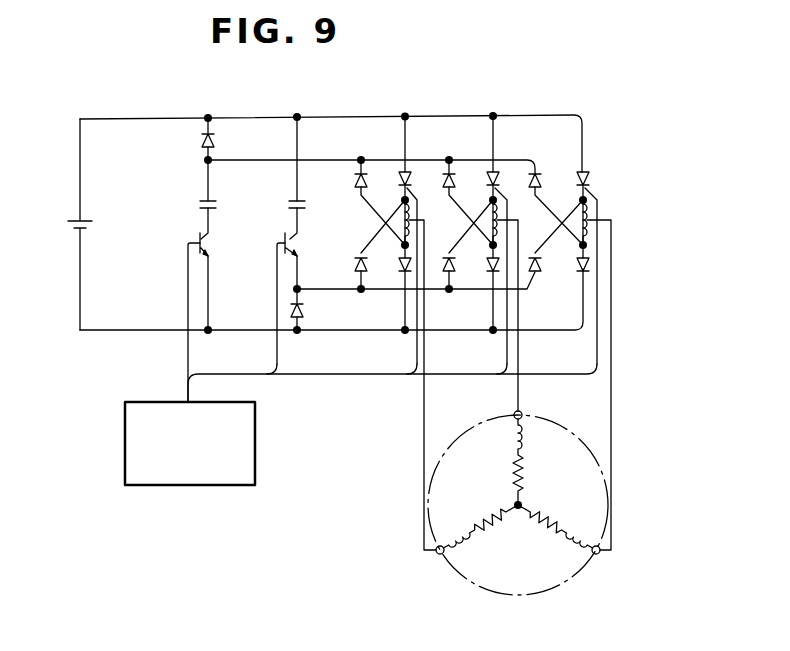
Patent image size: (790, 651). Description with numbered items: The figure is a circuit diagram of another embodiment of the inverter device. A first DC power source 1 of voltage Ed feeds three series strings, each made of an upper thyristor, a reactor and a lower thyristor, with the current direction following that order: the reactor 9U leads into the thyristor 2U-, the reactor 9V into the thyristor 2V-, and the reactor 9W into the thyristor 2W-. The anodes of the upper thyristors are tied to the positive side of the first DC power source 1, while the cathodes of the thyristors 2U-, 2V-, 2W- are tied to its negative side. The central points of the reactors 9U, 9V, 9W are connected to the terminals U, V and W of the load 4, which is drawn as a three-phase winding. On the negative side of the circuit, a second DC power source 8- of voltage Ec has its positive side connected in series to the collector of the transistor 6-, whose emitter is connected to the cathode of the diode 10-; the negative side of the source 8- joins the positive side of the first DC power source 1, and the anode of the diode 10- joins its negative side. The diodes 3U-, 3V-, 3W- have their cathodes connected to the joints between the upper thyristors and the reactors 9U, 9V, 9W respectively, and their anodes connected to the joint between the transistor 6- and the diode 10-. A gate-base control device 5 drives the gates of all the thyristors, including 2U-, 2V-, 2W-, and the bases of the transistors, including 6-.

The first DC power source 1 is at (67, 228).
The load 4 is at (456, 572).
The gate-base control device 5 is at (198, 487).
The transistor 6- is at (283, 242).
The second DC power source 8- is at (288, 205).
The diode 10- is at (308, 318).
The thyristor 2U- is at (401, 279).
The thyristor 2V- is at (486, 279).
The thyristor 2W- is at (590, 265).
The diode 3U- is at (357, 278).
The diode 3V- is at (451, 287).
The diode 3W- is at (537, 277).
The reactor 9U is at (403, 220).
The reactor 9V is at (489, 216).
The reactor 9W is at (591, 217).